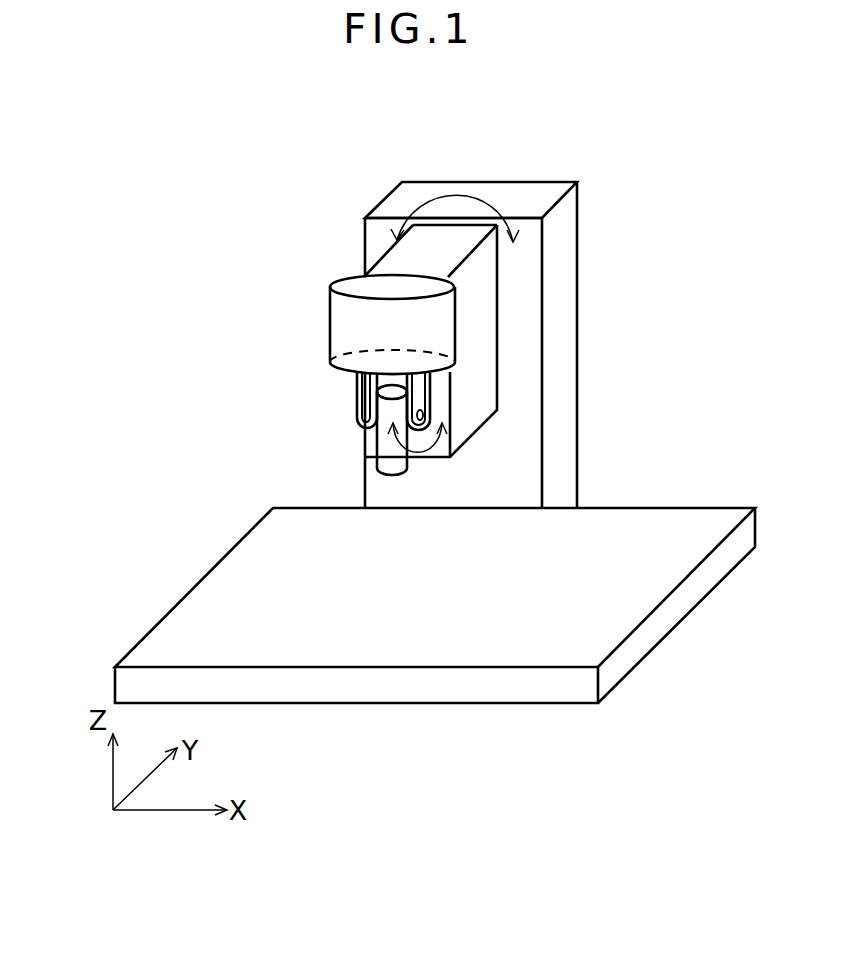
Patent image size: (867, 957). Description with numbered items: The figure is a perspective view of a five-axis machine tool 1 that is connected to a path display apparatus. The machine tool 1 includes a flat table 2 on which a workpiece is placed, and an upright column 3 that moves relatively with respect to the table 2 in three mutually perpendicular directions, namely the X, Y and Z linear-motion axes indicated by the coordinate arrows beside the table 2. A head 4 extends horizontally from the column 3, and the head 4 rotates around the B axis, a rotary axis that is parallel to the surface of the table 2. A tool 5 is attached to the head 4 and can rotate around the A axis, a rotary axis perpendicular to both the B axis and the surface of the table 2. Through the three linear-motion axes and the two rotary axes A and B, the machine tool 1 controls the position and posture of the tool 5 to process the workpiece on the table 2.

The machine tool 1 is at (489, 345).
The table 2 is at (618, 610).
The column 3 is at (568, 397).
The head 4 is at (307, 295).
The tool 5 is at (382, 448).
The A axis A is at (425, 448).
The B axis B is at (458, 192).